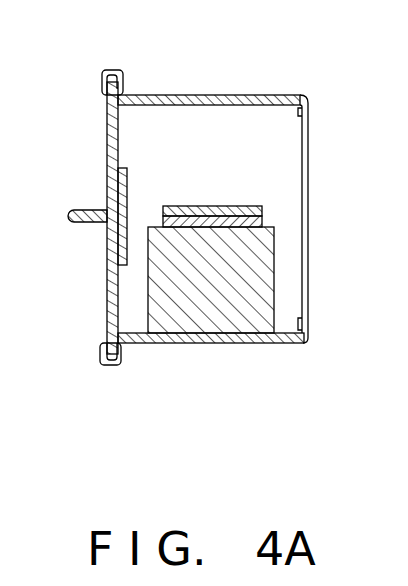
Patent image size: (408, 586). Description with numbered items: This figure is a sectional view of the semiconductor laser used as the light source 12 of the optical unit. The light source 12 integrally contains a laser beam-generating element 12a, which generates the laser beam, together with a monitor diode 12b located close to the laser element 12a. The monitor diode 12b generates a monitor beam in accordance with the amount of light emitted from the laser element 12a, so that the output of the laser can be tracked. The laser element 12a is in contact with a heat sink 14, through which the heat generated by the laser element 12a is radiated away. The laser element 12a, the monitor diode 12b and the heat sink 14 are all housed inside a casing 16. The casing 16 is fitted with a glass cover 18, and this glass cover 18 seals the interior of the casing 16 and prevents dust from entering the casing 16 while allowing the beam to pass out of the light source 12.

The light source 12 is at (220, 225).
The laser beam-generating element 12a is at (205, 206).
The monitor diode 12b is at (115, 166).
The heat sink 14 is at (243, 318).
The casing 16 is at (189, 344).
The glass cover 18 is at (310, 140).